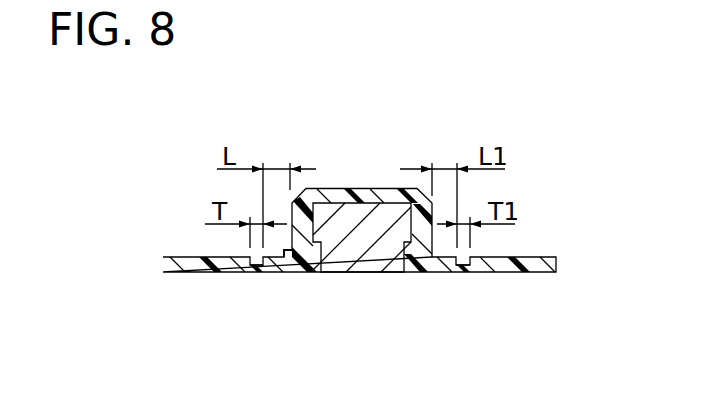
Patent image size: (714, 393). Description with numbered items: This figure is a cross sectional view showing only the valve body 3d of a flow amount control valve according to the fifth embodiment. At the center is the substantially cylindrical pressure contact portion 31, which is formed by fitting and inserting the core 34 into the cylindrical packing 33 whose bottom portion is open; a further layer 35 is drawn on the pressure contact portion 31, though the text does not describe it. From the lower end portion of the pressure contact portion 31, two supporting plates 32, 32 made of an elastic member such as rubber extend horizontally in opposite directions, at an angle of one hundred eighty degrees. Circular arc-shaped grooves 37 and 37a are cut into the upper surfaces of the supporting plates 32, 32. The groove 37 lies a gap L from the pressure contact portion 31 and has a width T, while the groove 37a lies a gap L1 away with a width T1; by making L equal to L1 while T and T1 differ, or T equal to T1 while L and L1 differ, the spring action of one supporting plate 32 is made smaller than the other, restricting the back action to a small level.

The valve body 3d is at (559, 231).
The pressure contact portion 31 is at (390, 178).
The supporting plate 32 is at (172, 275).
The cylindrical packing 33 is at (282, 253).
The core 34 is at (364, 255).
The plating layer 35 is at (342, 188).
The circular arc-shaped groove 37 is at (250, 266).
The circular arc-shaped groove 37a is at (458, 262).